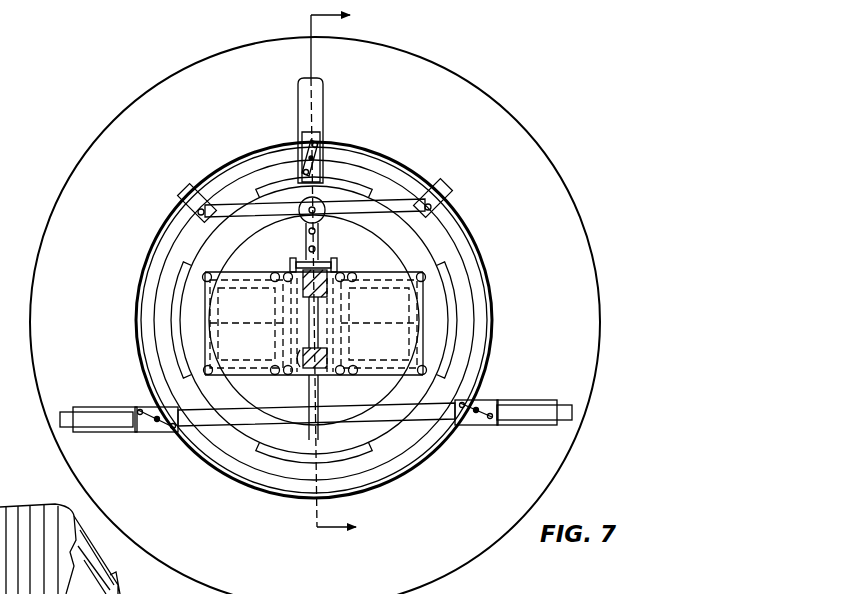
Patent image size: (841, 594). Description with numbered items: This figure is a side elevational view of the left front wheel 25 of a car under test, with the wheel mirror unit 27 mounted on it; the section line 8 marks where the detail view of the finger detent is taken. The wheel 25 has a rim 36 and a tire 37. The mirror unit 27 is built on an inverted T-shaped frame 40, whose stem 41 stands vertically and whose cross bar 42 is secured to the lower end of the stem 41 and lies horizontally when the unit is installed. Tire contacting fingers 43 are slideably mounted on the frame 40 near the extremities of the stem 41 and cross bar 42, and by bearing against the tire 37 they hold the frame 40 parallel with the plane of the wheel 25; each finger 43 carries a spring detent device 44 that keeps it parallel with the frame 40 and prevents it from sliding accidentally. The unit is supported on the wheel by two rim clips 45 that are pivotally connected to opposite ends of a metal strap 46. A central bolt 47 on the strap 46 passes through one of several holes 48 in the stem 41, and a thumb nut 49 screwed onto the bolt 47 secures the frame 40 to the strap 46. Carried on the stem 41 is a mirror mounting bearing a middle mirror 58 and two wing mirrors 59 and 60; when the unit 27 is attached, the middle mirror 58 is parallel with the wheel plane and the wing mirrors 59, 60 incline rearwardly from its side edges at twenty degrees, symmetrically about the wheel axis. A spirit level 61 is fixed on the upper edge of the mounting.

The section line 8- 8 is at (320, 270).
The left front wheel 25 is at (532, 175).
The wheel mirror unit 27 is at (425, 160).
The rim 36 is at (482, 275).
The tire 37 is at (580, 248).
The inverted T-shaped frame 40 is at (437, 425).
The stem 41 is at (318, 390).
The cross bar 42 is at (428, 410).
The tire contacting fingers 43 is at (316, 100).
The spring detent device 44 is at (318, 157).
The rim clips 45 is at (196, 192).
The metal strap 46 is at (366, 210).
The central bolt 47 is at (305, 222).
The holes 48 is at (337, 241).
The thumb nut 49 is at (296, 216).
The middle mirror 58 is at (299, 368).
The wing mirror 59 is at (241, 377).
The wing mirror 60 is at (393, 395).
The spirit level 61 is at (333, 267).